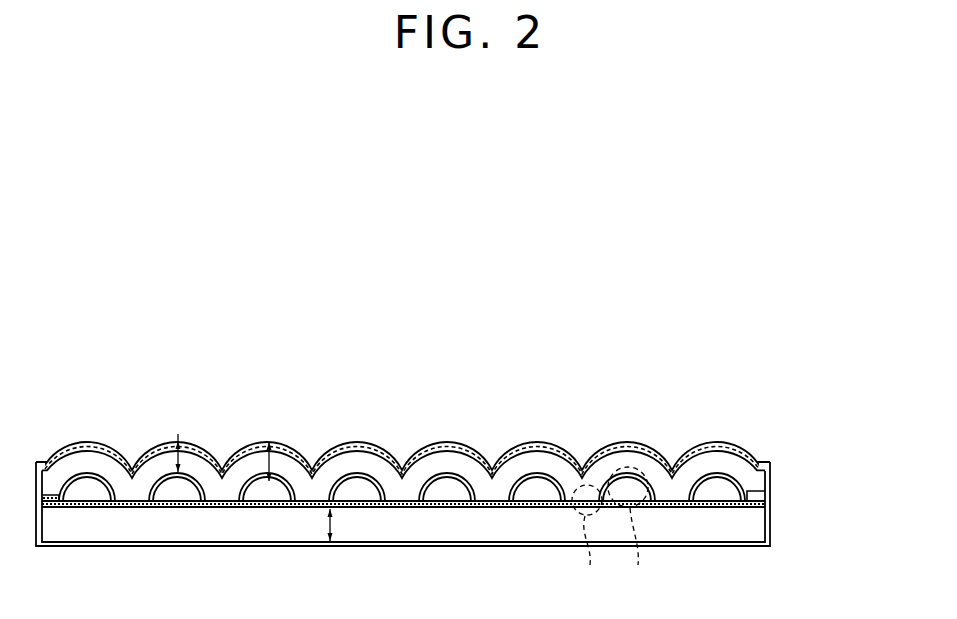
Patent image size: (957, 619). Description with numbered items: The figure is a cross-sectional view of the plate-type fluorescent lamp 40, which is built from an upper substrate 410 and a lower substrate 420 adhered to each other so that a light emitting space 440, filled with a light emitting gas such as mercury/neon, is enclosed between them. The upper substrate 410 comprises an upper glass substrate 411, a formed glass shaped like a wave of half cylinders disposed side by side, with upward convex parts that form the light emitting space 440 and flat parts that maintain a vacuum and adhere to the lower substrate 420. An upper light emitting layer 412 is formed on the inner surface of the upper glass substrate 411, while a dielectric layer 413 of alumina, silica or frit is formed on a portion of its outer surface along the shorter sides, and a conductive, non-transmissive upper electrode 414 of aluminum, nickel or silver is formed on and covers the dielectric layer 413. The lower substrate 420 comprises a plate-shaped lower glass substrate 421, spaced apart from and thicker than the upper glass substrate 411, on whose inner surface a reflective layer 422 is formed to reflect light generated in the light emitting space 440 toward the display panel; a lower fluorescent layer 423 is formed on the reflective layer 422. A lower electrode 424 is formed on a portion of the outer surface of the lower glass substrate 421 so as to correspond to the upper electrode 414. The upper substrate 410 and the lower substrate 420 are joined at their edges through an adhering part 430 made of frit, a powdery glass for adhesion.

The plate-type fluorescent lamp 40 is at (119, 366).
The upper substrate 410 is at (620, 378).
The upper glass substrate 411 is at (760, 457).
The upper light emitting layer 412 is at (713, 473).
The dielectric layer 413 is at (678, 457).
The upper electrode 414 is at (628, 453).
The lower substrate 420 is at (855, 500).
The lower glass substrate 421 is at (762, 527).
The reflective layer 422 is at (770, 508).
The lower fluorescent layer 423 is at (768, 505).
The lower electrode 424 is at (745, 547).
The adhering part 430 is at (52, 500).
The light emitting space 440 is at (450, 488).